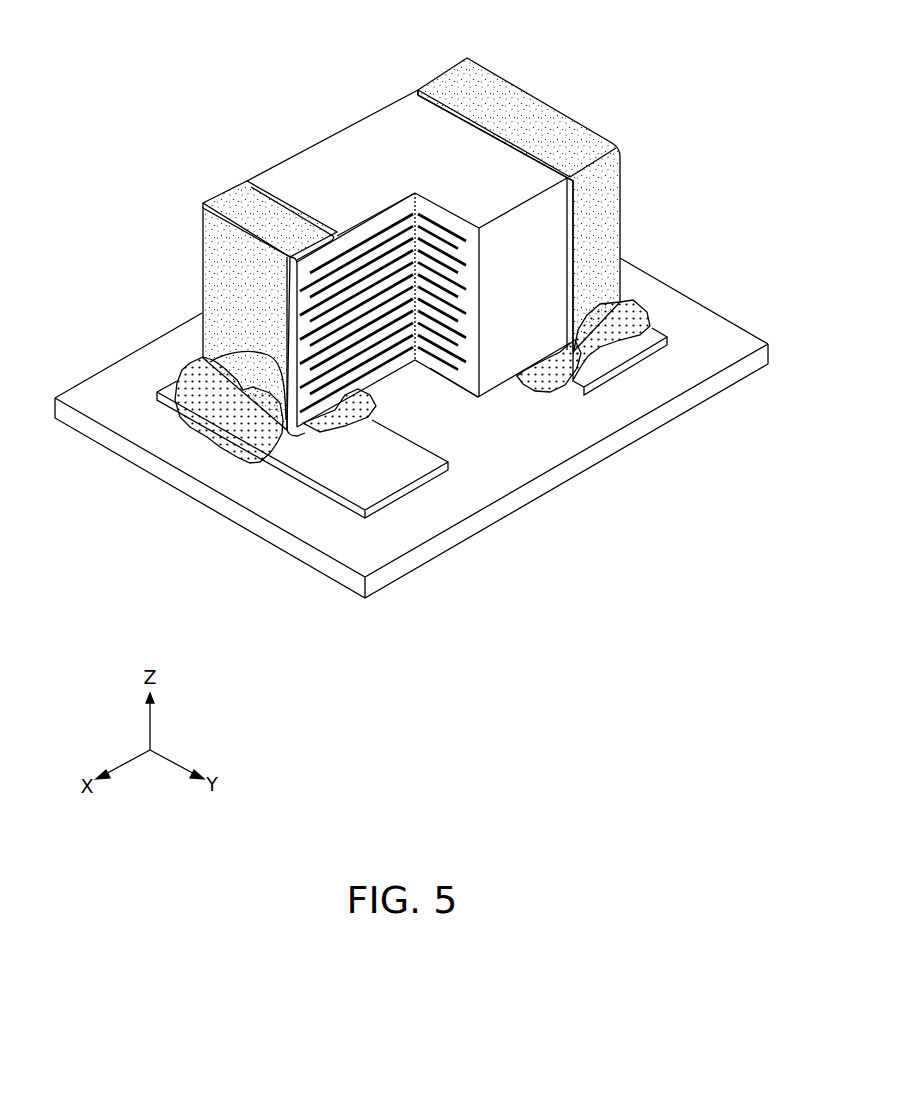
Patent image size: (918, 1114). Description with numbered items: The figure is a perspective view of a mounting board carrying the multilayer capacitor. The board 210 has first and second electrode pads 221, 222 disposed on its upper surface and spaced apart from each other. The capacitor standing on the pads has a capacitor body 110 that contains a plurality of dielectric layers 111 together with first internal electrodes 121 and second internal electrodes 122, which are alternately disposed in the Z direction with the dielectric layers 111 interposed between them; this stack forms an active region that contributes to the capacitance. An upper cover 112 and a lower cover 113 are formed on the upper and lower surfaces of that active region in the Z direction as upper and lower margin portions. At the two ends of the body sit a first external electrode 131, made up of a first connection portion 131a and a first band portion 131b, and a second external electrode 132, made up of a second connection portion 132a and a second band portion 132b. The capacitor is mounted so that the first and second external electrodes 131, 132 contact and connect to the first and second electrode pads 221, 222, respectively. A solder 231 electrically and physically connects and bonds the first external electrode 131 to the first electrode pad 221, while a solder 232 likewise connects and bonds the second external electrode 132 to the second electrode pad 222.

The capacitor body 110 is at (354, 306).
The dielectric layer 111 is at (287, 348).
The upper cover 112 is at (347, 246).
The lower cover 113 is at (457, 375).
The first internal electrode 121 is at (286, 275).
The second internal electrode 122 is at (437, 253).
The first external electrode 131 is at (266, 428).
The first connection portion 131a is at (290, 358).
The first band portion 131b is at (298, 432).
The second external electrode 132 is at (600, 205).
The second connection portion 132a is at (622, 218).
The second band portion 132b is at (622, 302).
The board 210 is at (555, 437).
The first electrode pad 221 is at (173, 392).
The second electrode pad 222 is at (660, 326).
The solder 231 is at (215, 377).
The solder 232 is at (625, 338).